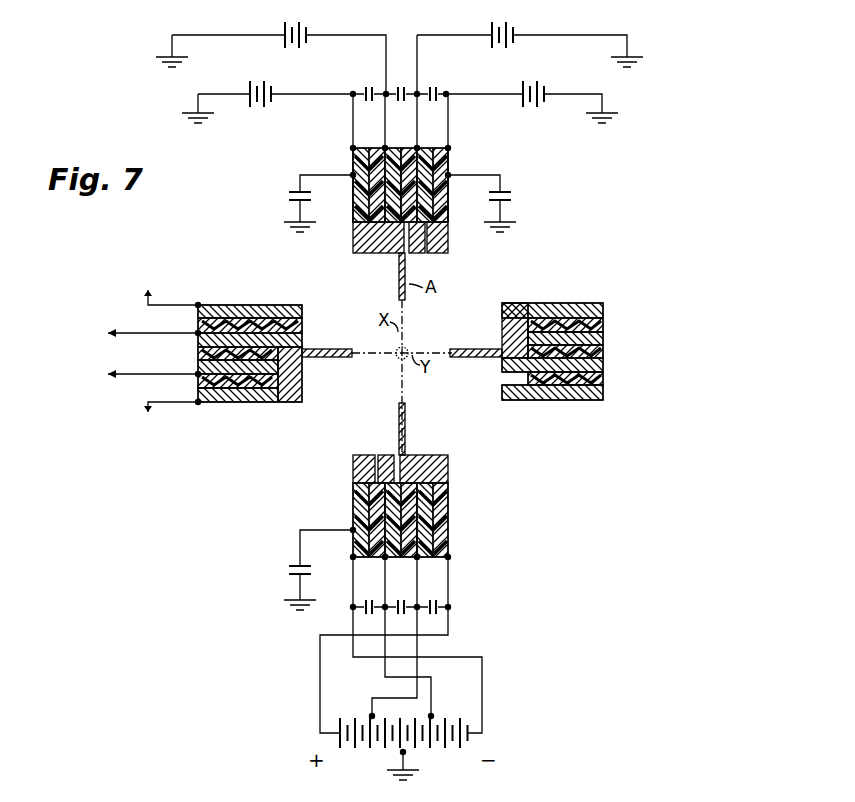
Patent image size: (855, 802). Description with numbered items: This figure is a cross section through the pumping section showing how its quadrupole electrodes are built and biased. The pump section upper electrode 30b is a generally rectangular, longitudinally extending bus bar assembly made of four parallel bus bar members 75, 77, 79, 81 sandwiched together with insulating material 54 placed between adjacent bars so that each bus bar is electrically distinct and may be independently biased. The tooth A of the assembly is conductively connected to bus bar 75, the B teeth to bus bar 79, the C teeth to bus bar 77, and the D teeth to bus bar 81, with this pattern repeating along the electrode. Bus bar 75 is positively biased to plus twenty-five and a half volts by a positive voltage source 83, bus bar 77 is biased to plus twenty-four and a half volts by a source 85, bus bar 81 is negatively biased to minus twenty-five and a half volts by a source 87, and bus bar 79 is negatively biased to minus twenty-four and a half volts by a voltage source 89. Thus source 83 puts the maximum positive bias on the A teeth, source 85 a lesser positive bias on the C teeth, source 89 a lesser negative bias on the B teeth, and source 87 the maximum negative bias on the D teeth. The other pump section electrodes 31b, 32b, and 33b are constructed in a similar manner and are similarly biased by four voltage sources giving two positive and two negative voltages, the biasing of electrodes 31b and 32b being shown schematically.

The voltage source 85 is at (284, 30).
The positive voltage source 83 is at (254, 87).
The voltage source 89 is at (520, 28).
The voltage source 87 is at (547, 86).
The bus bar member 75 is at (352, 148).
The bus bar member 77 is at (384, 147).
The layer of insulating material 54 is at (412, 147).
The bus bar member 79 is at (420, 147).
The bus bar member 81 is at (450, 148).
The pump section upper electrode 30b is at (408, 207).
The pump section electrode 31b is at (502, 520).
The pump section electrode 32b is at (198, 305).
The pump section electrode 33b is at (597, 434).